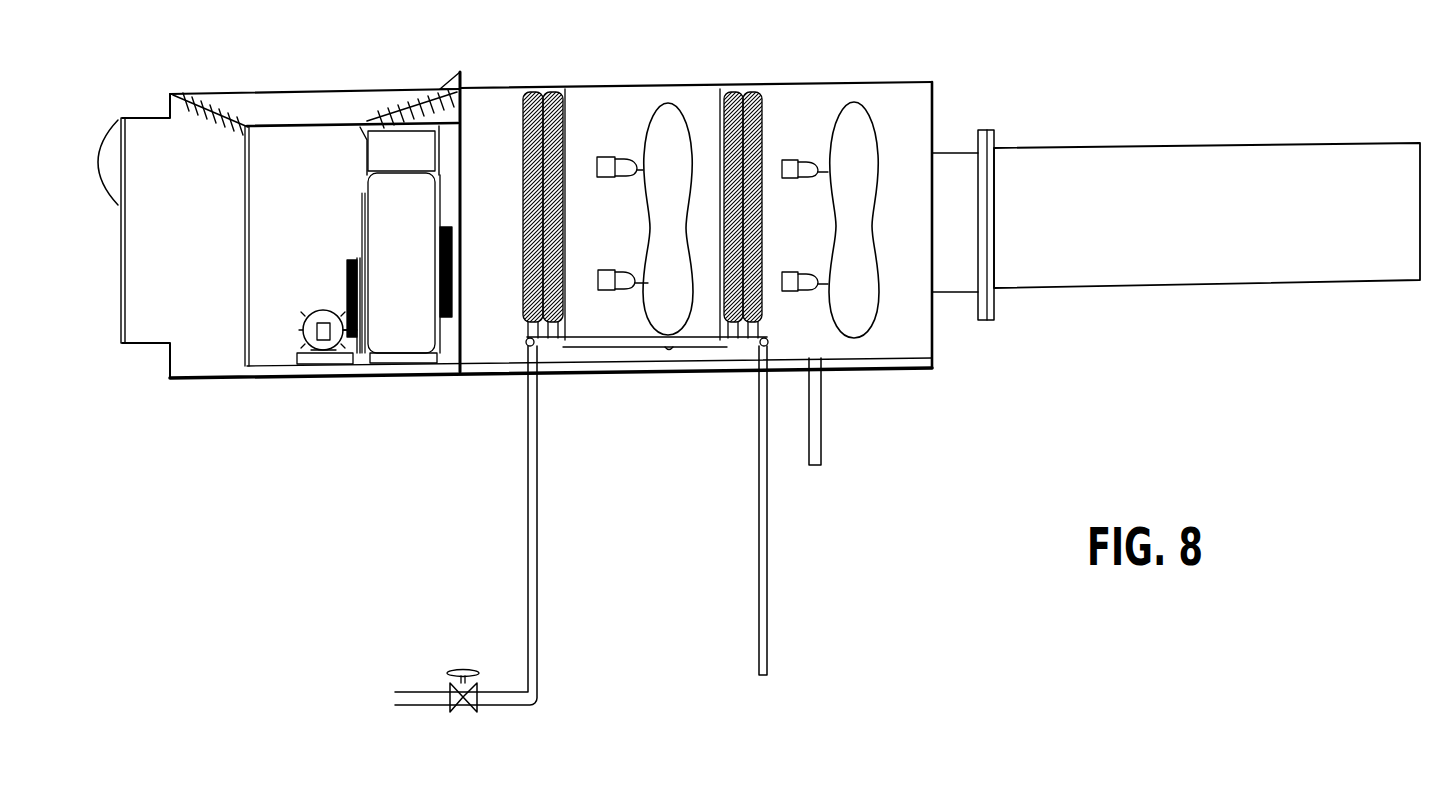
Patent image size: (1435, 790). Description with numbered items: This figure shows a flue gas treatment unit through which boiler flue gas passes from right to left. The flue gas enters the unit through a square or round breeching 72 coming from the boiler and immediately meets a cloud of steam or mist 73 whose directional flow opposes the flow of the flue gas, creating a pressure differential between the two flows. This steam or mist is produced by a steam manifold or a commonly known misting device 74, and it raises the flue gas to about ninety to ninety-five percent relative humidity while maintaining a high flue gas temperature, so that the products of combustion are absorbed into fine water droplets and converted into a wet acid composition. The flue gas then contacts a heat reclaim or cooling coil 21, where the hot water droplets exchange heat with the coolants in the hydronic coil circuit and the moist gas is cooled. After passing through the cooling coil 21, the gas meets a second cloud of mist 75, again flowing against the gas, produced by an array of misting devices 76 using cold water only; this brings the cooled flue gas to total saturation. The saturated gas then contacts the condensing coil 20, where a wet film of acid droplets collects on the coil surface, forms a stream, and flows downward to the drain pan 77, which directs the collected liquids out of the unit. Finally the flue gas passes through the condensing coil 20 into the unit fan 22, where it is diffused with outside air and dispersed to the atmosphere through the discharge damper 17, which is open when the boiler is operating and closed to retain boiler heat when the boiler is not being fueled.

The discharge damper 17 is at (121, 118).
The condensing coil 20 is at (538, 90).
The heat reclaim or cooling coil 21 is at (743, 90).
The unit fan 22 is at (364, 228).
The breeching 72 is at (1078, 230).
The cloud of steam or mist 73 is at (877, 97).
The steam manifold or misting device 74 is at (807, 160).
The second cloud of mist 75 is at (667, 103).
The array of misting devices 76 is at (607, 157).
The drain pan 77 is at (635, 457).